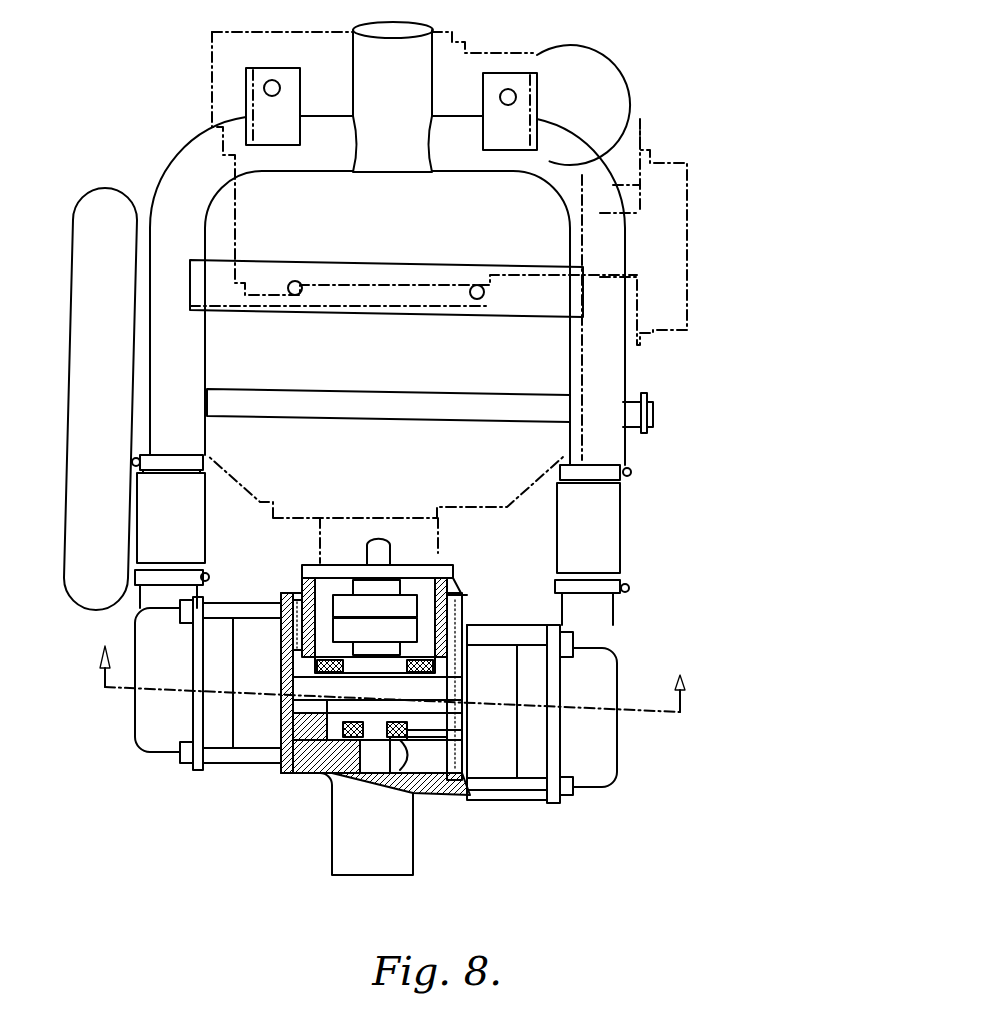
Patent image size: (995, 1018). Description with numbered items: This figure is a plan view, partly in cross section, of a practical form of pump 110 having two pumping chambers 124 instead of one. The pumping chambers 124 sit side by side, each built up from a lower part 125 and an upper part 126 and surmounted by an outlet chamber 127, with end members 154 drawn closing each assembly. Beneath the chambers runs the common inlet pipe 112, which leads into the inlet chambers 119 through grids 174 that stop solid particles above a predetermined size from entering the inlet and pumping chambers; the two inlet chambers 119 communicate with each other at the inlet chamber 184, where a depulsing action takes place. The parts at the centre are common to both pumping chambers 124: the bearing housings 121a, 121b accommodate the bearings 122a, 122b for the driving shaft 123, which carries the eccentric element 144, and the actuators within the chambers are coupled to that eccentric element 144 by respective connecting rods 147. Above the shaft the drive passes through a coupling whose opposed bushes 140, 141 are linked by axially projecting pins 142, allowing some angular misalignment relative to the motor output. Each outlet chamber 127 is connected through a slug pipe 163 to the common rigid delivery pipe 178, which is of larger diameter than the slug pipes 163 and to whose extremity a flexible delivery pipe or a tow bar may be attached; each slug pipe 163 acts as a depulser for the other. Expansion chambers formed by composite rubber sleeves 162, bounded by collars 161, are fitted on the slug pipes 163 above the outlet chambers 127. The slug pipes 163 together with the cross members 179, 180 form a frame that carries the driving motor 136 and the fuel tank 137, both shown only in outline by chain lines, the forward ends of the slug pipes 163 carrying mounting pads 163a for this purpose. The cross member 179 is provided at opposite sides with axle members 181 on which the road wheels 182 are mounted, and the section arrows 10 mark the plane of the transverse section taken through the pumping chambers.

The section line 10 is at (376, 678).
The pump 110 is at (466, 812).
The inlet pipe 112 is at (402, 832).
The inlet chambers 119 is at (291, 605).
The bearing housing 121a is at (325, 747).
The bearing housing 121b is at (290, 680).
The bearing 122a is at (415, 735).
The bearing 122b is at (390, 707).
The driving shaft 123 is at (380, 705).
The pumping chambers 124 is at (248, 591).
The lower part of pumping chamber 125 is at (263, 767).
The upper part of pumping chamber 126 is at (210, 763).
The output chambers 127 is at (376, 697).
The driving motor 136 is at (508, 478).
The fuel tank 137 is at (297, 42).
The bush 140 is at (410, 600).
The bush 141 is at (410, 630).
The pins 142 is at (408, 612).
The eccentric element 144 is at (378, 757).
The connecting rods 147 is at (330, 683).
The spacer 154 is at (243, 755).
The collar 161 is at (193, 460).
The composite sleeves 162 is at (193, 508).
The slug pipes 163 is at (202, 335).
The mounting pads 163a is at (273, 72).
The grids 174 is at (293, 600).
The delivery pipe 178 is at (434, 21).
The cross member 179 is at (380, 390).
The cross member 180 is at (403, 283).
The axle members 181 is at (133, 387).
The road wheels 182 is at (96, 600).
The inlet chamber 184 is at (343, 747).